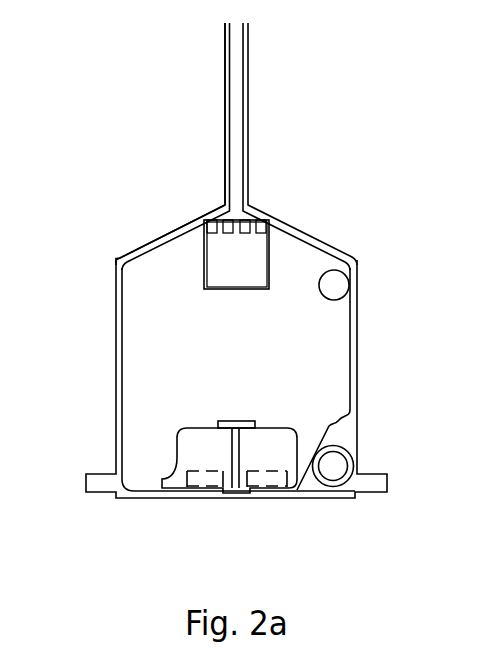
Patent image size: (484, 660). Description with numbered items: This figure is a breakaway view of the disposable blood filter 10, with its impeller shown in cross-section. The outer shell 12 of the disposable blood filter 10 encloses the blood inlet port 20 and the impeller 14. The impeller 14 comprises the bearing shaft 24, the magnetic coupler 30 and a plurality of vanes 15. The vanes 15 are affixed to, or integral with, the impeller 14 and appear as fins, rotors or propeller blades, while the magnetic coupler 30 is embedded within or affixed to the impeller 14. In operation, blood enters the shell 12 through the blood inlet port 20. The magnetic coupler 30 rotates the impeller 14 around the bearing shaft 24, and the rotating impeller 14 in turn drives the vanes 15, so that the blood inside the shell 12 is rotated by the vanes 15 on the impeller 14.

The disposable blood filter 10 is at (317, 203).
The shell 12 is at (358, 322).
The impeller 14 is at (305, 438).
The vanes 15 is at (248, 440).
The blood inlet port 20 is at (352, 443).
The bearing shaft 24 is at (222, 415).
The magnetic coupler 30 is at (185, 468).